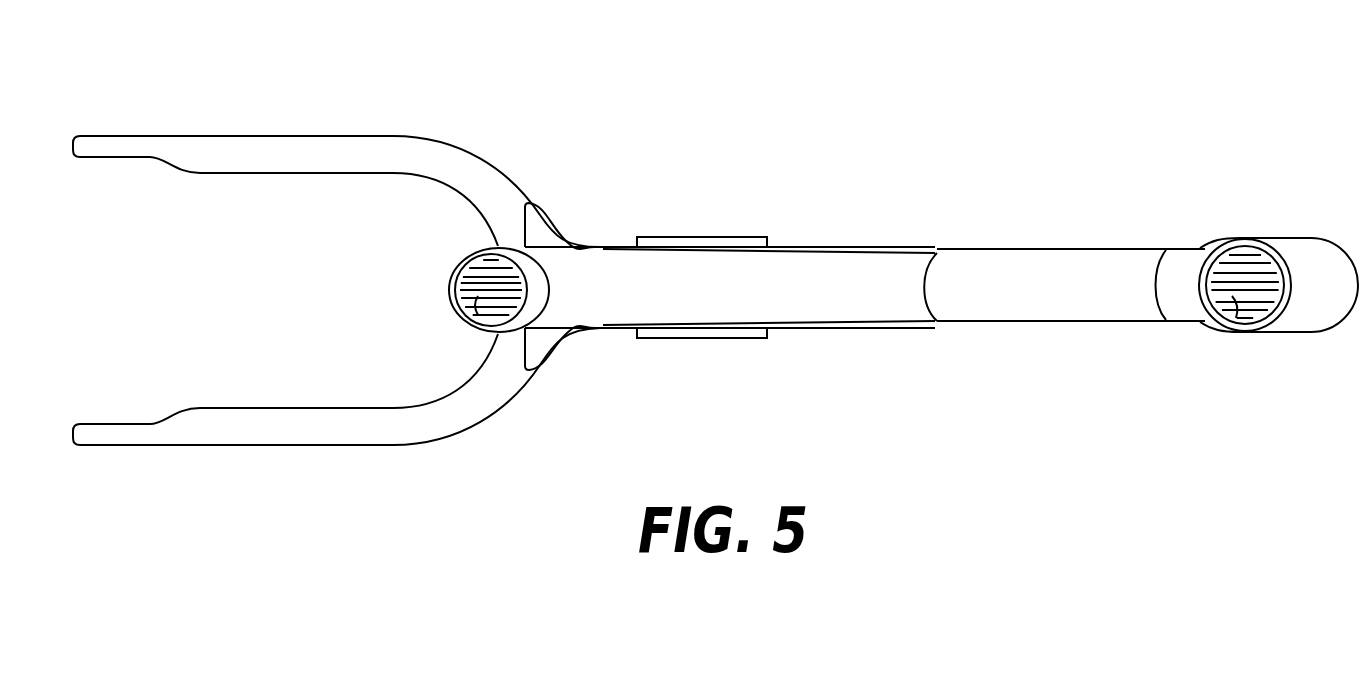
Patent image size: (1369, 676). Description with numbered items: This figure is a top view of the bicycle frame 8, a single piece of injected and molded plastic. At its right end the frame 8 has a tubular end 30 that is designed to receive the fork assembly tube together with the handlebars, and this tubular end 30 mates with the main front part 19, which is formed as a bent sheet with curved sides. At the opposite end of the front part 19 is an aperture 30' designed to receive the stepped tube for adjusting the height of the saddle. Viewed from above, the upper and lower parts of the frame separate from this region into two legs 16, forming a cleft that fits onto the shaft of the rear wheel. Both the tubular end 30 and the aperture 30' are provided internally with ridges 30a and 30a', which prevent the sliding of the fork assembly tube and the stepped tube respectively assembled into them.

The legs 16 is at (311, 136).
The frame 8 is at (731, 237).
The main front part 19 is at (918, 247).
The tubular end 30 is at (1245, 242).
The ridges 30a is at (1245, 323).
The aperture 30' is at (458, 290).
The ridges 30a' is at (465, 319).